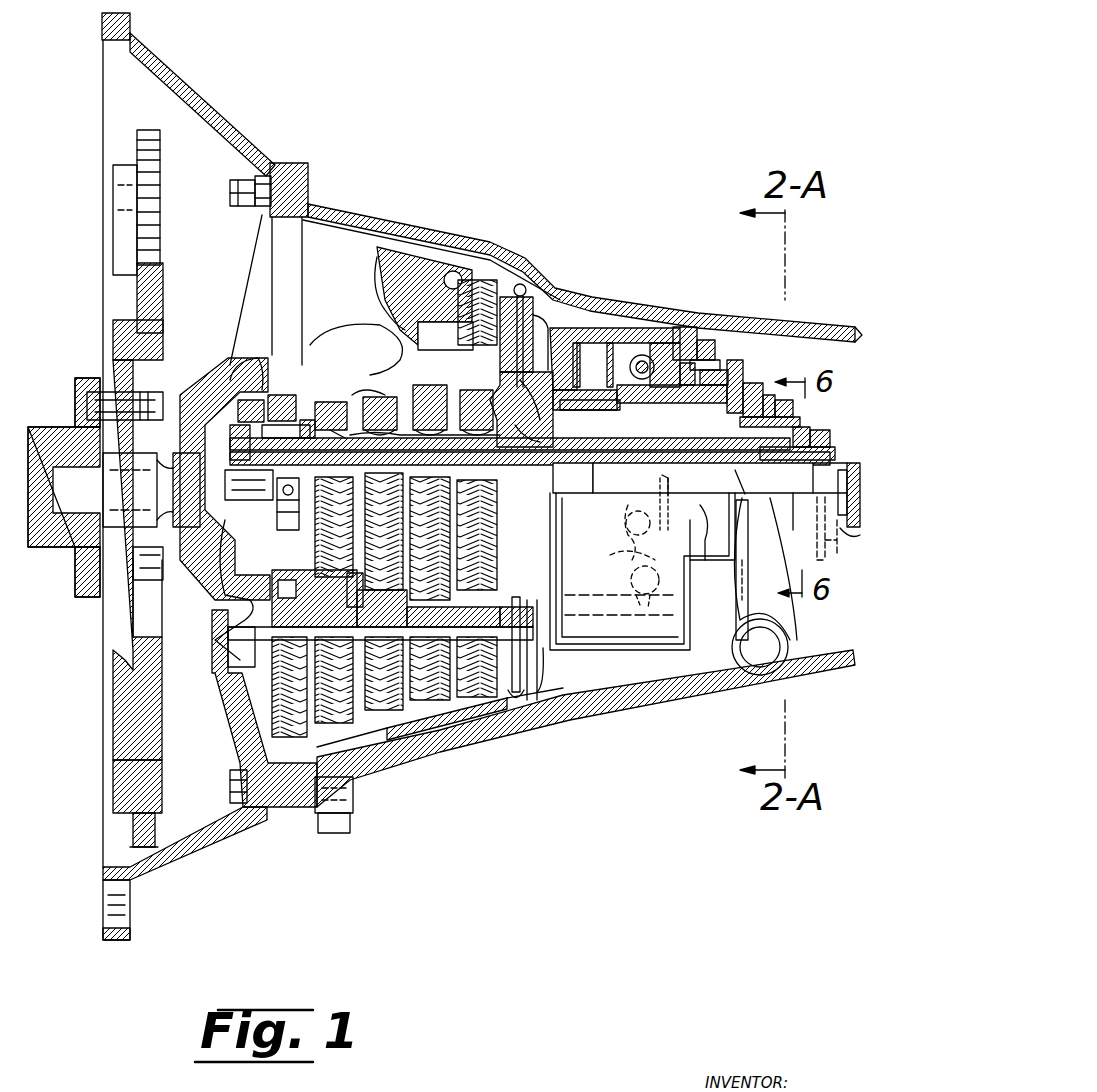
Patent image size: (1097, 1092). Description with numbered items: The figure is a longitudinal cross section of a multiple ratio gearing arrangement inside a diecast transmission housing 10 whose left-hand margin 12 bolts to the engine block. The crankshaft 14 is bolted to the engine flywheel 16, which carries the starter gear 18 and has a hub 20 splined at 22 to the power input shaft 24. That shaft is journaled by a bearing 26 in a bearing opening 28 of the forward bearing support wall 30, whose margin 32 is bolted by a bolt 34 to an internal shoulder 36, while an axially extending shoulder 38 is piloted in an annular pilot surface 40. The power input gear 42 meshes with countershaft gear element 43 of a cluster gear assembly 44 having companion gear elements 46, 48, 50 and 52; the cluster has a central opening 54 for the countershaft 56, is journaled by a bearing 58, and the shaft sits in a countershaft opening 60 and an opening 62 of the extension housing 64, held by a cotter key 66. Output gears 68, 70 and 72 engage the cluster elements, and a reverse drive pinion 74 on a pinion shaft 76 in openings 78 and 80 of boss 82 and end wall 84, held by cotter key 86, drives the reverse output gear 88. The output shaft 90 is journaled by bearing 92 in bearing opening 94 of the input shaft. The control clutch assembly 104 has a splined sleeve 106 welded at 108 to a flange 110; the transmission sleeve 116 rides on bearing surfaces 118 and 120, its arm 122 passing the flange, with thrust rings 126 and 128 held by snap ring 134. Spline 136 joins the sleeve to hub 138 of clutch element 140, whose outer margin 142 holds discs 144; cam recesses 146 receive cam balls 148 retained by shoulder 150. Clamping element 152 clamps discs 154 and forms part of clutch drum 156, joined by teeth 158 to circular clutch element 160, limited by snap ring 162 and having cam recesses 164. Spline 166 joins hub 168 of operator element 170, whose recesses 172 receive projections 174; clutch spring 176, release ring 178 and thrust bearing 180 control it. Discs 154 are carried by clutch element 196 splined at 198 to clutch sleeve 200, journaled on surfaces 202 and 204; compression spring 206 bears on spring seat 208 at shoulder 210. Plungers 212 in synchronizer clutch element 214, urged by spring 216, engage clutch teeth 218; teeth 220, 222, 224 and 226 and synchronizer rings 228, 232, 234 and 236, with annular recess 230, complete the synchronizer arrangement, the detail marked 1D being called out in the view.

The transmission housing 10 is at (415, 235).
The left-hand margin 12 is at (135, 30).
The crankshaft 14 is at (45, 430).
The engine flywheel 16 is at (165, 275).
The engine starter gear 18 is at (148, 140).
The hub 20 is at (150, 420).
The spline 22 is at (143, 468).
The power input shaft 24 is at (168, 570).
The bearing 26 is at (222, 376).
The bearing opening 28 is at (258, 360).
The forward bearing support wall 30 is at (248, 298).
The margin 32 is at (280, 165).
The bolt 34 is at (238, 207).
The internal shoulder 36 is at (262, 208).
The axially extending shoulder 38 is at (290, 257).
The annular pilot surface 40 is at (320, 212).
The power input gear 42 is at (335, 400).
The countershaft gear element 43 is at (314, 598).
The cluster gear assembly 44 is at (350, 680).
The gear element 46 is at (362, 555).
The gear element 48 is at (437, 609).
The gear element 50 is at (478, 614).
The reverse drive cluster gear element 52 is at (508, 595).
The central axially-extending opening 54 is at (328, 598).
The countershaft 56 is at (245, 700).
The bearing 58 is at (275, 640).
The countershaft opening 60 is at (236, 608).
The opening 62 is at (535, 665).
The extension housing 64 is at (455, 735).
The cotter key 66 is at (530, 605).
The first output gear 68 is at (334, 527).
The intermediate speed ratio output gear 70 is at (384, 531).
The low speed ratio output gear 72 is at (430, 538).
The reverse drive pinion 74 is at (478, 283).
The reverse drive pinion shaft 76 is at (428, 333).
The opening 78 is at (420, 306).
The opening 80 is at (549, 328).
The boss 82 is at (418, 290).
The end wall 84 is at (540, 310).
The cotter key 86 is at (518, 297).
The reverse drive output gear 88 is at (490, 407).
The transmission output shaft 90 is at (853, 545).
The bearing 92 is at (192, 500).
The bearing opening 94 is at (255, 425).
The control clutch assembly 104 is at (722, 370).
The externally splined sleeve 106 is at (790, 465).
The welding 108 is at (835, 519).
The flange 110 is at (806, 501).
The transmission sleeve 116 is at (578, 496).
The internal bearing surface 118 is at (330, 468).
The internal bearing surface 120 is at (860, 502).
The arm 122 is at (678, 504).
The thrust ring 126 is at (828, 450).
The thrust ring 128 is at (830, 448).
The snap ring 134 is at (842, 510).
The external spline 136 is at (738, 468).
The hub 138 is at (805, 427).
The clutch element 140 is at (575, 365).
The outer margin 142 is at (595, 328).
The externally splined clutch discs 144 is at (620, 343).
The cam recess 146 is at (612, 557).
The cam ball 148 is at (625, 530).
The annular shoulder 150 is at (608, 385).
The clamping clutch element 152 is at (553, 380).
The internally splined discs 154 is at (590, 409).
The clutch drum 156 is at (685, 327).
The clutch teeth 158 is at (706, 340).
The circular clutch element 160 is at (660, 367).
The snap ring 162 is at (700, 320).
The cam recess 164 is at (628, 586).
The external spline 166 is at (760, 383).
The internally splined hub 168 is at (790, 406).
The clutch operator element 170 is at (775, 335).
The cam recess 172 is at (735, 560).
The projection 174 is at (710, 530).
The clutch spring 176 is at (737, 360).
The clutch release ring 178 is at (770, 400).
The radial needle thrust bearing 180 is at (774, 403).
The externally splined clutch element 196 is at (538, 400).
The internal spline 198 is at (528, 428).
The clutch sleeve 200 is at (445, 458).
The bearing surface 202 is at (515, 470).
The bearing surface 204 is at (292, 450).
The compression spring 206 is at (625, 405).
The spring seat 208 is at (672, 483).
The shoulder 210 is at (700, 363).
The synchronizer plunger element 212 is at (266, 418).
The synchronizer clutch element 214 is at (294, 504).
The circular spring 216 is at (249, 484).
The internal clutch teeth 218 is at (346, 424).
The clutch teeth 220 is at (385, 400).
The clutch teeth 222 is at (381, 427).
The clutch teeth 224 is at (430, 426).
The clutch teeth 226 is at (477, 426).
The synchronizer ring 228 is at (372, 395).
The annular recess 230 is at (320, 450).
The synchronizer ring 232 is at (380, 413).
The synchronizer ring 234 is at (430, 407).
The synchronizer ring 236 is at (476, 410).
The detail 1D is at (316, 385).